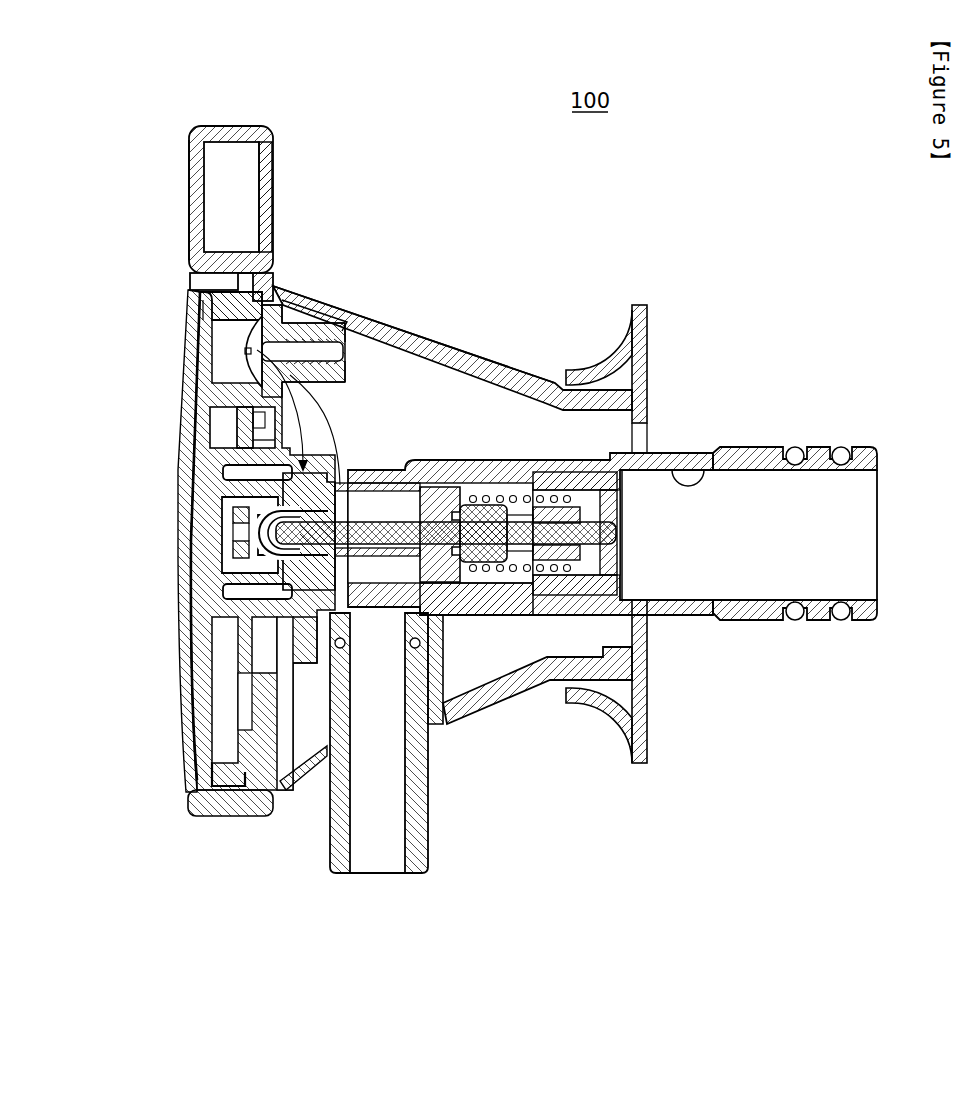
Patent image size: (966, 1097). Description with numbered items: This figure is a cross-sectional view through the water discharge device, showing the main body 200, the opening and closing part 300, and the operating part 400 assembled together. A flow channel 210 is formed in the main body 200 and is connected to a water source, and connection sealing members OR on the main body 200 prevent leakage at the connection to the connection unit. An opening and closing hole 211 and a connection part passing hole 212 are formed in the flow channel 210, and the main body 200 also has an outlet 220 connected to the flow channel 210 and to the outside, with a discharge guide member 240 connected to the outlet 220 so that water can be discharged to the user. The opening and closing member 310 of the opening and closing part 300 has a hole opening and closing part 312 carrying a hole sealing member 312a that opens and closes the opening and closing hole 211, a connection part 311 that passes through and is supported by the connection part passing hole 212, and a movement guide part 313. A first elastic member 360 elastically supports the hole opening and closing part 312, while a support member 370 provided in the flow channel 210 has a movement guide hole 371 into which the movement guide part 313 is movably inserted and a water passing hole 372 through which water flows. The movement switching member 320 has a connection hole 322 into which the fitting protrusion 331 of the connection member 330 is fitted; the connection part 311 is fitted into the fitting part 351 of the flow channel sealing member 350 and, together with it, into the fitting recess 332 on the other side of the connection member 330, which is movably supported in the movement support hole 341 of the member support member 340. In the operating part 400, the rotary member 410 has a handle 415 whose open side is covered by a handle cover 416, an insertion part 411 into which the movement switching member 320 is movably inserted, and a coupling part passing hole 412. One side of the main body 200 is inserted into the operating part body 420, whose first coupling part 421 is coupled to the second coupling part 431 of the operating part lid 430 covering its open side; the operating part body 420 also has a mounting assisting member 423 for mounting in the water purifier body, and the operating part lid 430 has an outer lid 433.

The main body 200 is at (768, 436).
The flow channel 210 is at (697, 467).
The opening and closing hole 211 is at (430, 488).
The connection part passing hole 212 is at (478, 630).
The outlet 220 is at (432, 645).
The discharge guide member 240 is at (434, 798).
The opening and closing part 300 is at (570, 458).
The opening and closing member 310 is at (495, 505).
The connection part 311 is at (360, 483).
The hole opening and closing part 312 is at (543, 655).
The hole sealing member 312a is at (520, 477).
The movement guide part 313 is at (645, 352).
The movement switching member 320 is at (220, 512).
The connection hole 322 is at (285, 480).
The connection member 330 is at (300, 583).
The fitting protrusion 331 is at (263, 537).
The fitting recess 332 is at (283, 600).
The member support member 340 is at (280, 372).
The movement support hole 341 is at (247, 350).
The flow channel sealing member 350 is at (341, 575).
The fitting part 351 is at (305, 608).
The first elastic member 360 is at (588, 686).
The support member 370 is at (617, 609).
The movement guide hole 371 is at (633, 548).
The water passing hole 372 is at (645, 705).
The operating part 400 is at (348, 245).
The rotary member 410 is at (225, 116).
The insertion part 411 is at (266, 563).
The coupling part passing hole 412 is at (247, 440).
The handle 415 is at (197, 165).
The handle cover 416 is at (268, 165).
The operating part body 420 is at (440, 327).
The first coupling part 421 is at (335, 322).
The mounting assisting member 423 is at (597, 347).
The operating part lid 430 is at (178, 593).
The second coupling part 431 is at (275, 276).
The outer lid 433 is at (183, 417).
The connection sealing member OR is at (841, 447).